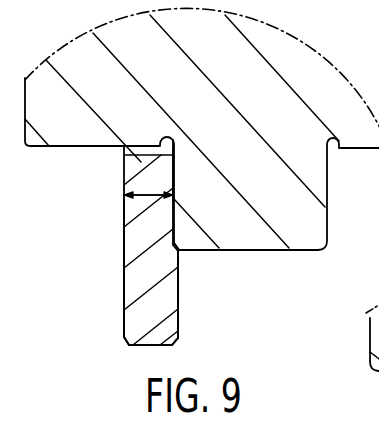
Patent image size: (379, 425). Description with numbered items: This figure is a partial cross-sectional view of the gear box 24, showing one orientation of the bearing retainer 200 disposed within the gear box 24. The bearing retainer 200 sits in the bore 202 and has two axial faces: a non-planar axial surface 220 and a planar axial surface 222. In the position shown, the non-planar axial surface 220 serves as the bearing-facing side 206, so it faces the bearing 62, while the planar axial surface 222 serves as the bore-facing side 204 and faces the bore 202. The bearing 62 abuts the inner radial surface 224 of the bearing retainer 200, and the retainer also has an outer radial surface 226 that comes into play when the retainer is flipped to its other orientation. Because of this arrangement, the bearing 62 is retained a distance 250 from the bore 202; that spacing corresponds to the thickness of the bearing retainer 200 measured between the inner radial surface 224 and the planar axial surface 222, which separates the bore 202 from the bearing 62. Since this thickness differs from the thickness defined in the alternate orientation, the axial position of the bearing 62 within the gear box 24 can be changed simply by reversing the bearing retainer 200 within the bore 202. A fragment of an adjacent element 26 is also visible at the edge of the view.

The bearing 62 is at (267, 99).
The bearing retainer 200 is at (143, 162).
The bore 202 is at (120, 283).
The bore-facing side 204 is at (100, 262).
The bearing-facing side 206 is at (213, 211).
The non-planar axial surface 220 is at (185, 313).
The planar axial surface 222 is at (122, 242).
The inner radial surface 224 is at (175, 171).
The outer radial surface 226 is at (180, 271).
The distance 250 is at (150, 193).
The gear box 24 is at (279, 322).
The component 26 is at (372, 361).